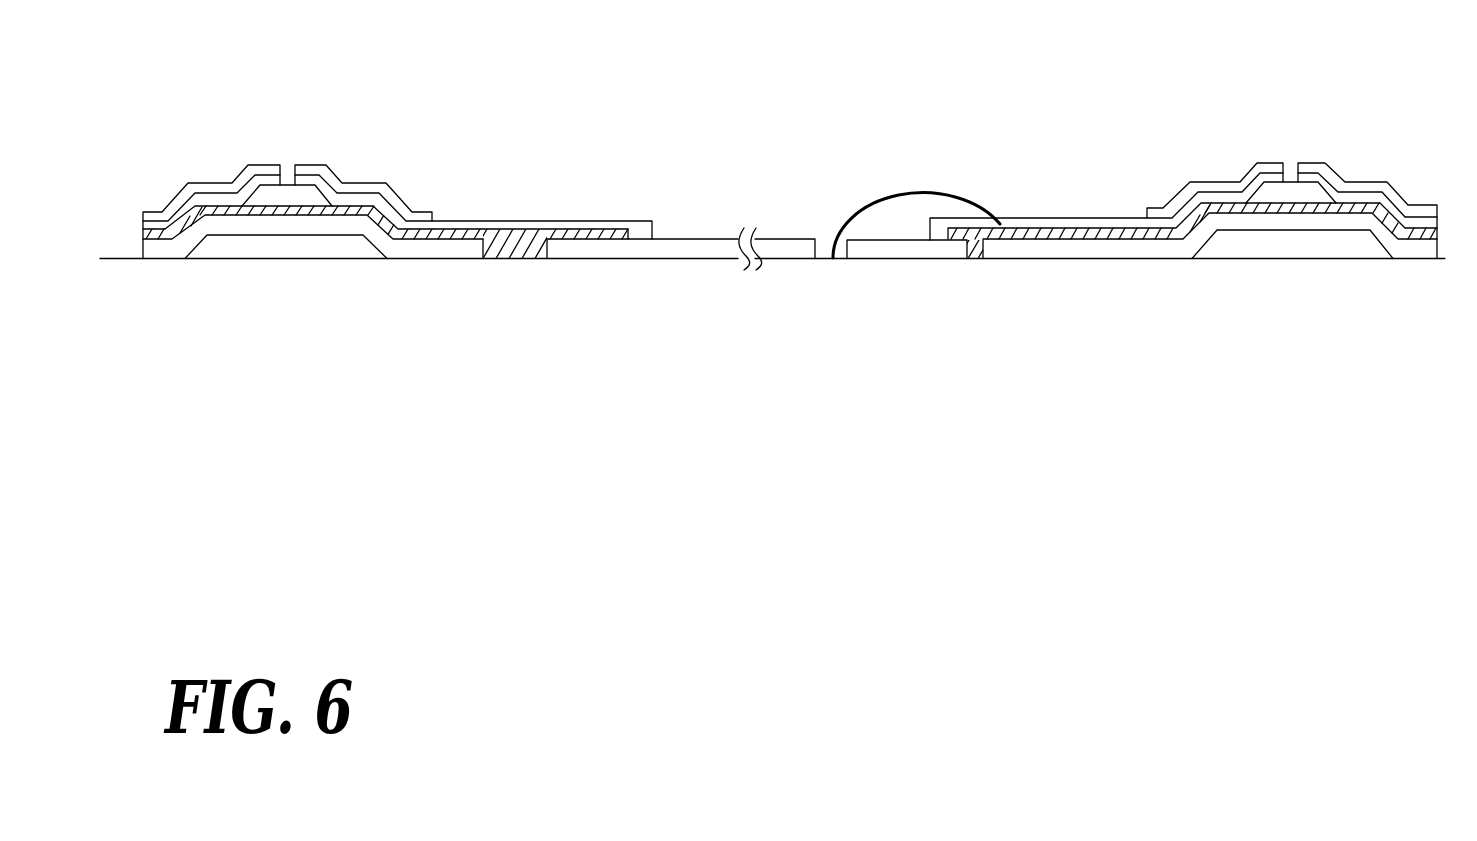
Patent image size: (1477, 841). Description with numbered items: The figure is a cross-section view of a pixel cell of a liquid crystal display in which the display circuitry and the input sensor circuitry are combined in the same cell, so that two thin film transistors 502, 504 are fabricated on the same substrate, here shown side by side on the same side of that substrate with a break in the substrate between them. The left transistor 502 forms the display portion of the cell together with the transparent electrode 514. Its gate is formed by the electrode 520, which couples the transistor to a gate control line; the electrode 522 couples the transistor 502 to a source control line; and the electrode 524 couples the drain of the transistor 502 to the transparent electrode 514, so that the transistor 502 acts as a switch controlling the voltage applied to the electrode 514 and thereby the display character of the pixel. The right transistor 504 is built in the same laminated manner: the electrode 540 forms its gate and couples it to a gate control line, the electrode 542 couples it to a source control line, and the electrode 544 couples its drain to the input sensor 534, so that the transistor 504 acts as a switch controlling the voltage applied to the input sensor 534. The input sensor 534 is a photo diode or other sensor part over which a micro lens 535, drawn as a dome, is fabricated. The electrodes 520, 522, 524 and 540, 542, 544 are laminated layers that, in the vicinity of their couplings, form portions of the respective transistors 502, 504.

The thin film transistor 502 is at (288, 135).
The thin film transistor 504 is at (1283, 130).
The transparent electrode 514 is at (662, 239).
The electrode 520 is at (292, 256).
The electrode 522 is at (146, 222).
The electrode 524 is at (526, 222).
The input sensor 534 is at (920, 248).
The micro lens 535 is at (920, 194).
The electrode 540 is at (1265, 252).
The electrode 542 is at (1428, 219).
The electrode 544 is at (1043, 219).